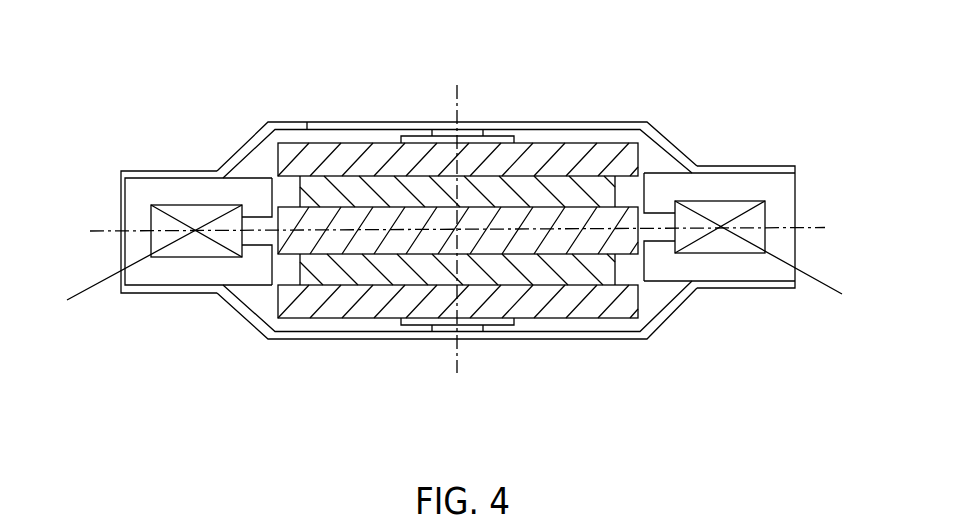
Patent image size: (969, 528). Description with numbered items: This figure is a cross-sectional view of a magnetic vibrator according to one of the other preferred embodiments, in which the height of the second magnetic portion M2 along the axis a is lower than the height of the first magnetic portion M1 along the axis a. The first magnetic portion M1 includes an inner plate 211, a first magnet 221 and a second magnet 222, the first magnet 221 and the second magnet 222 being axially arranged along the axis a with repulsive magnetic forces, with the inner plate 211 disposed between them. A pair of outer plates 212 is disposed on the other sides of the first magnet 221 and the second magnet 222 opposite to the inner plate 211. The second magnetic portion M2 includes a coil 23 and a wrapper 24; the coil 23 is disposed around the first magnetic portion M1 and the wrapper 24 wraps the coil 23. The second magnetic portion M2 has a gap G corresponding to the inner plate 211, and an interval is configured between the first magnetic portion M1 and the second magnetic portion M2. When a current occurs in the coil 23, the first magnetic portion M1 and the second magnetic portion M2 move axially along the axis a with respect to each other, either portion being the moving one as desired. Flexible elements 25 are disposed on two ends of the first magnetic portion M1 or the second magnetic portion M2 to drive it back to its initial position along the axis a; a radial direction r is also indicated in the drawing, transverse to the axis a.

The inner plate 211 is at (350, 213).
The outer plates 212 is at (407, 165).
The first magnet 221 is at (563, 197).
The second magnet 222 is at (335, 270).
The coil 23 is at (720, 208).
The wrapper 24 is at (725, 267).
The flexible elements 25 is at (478, 340).
The gap G is at (257, 214).
The first magnetic portion M1 is at (492, 98).
The second magnetic portion M2 is at (687, 350).
The axis a is at (457, 217).
The radial direction r is at (464, 227).